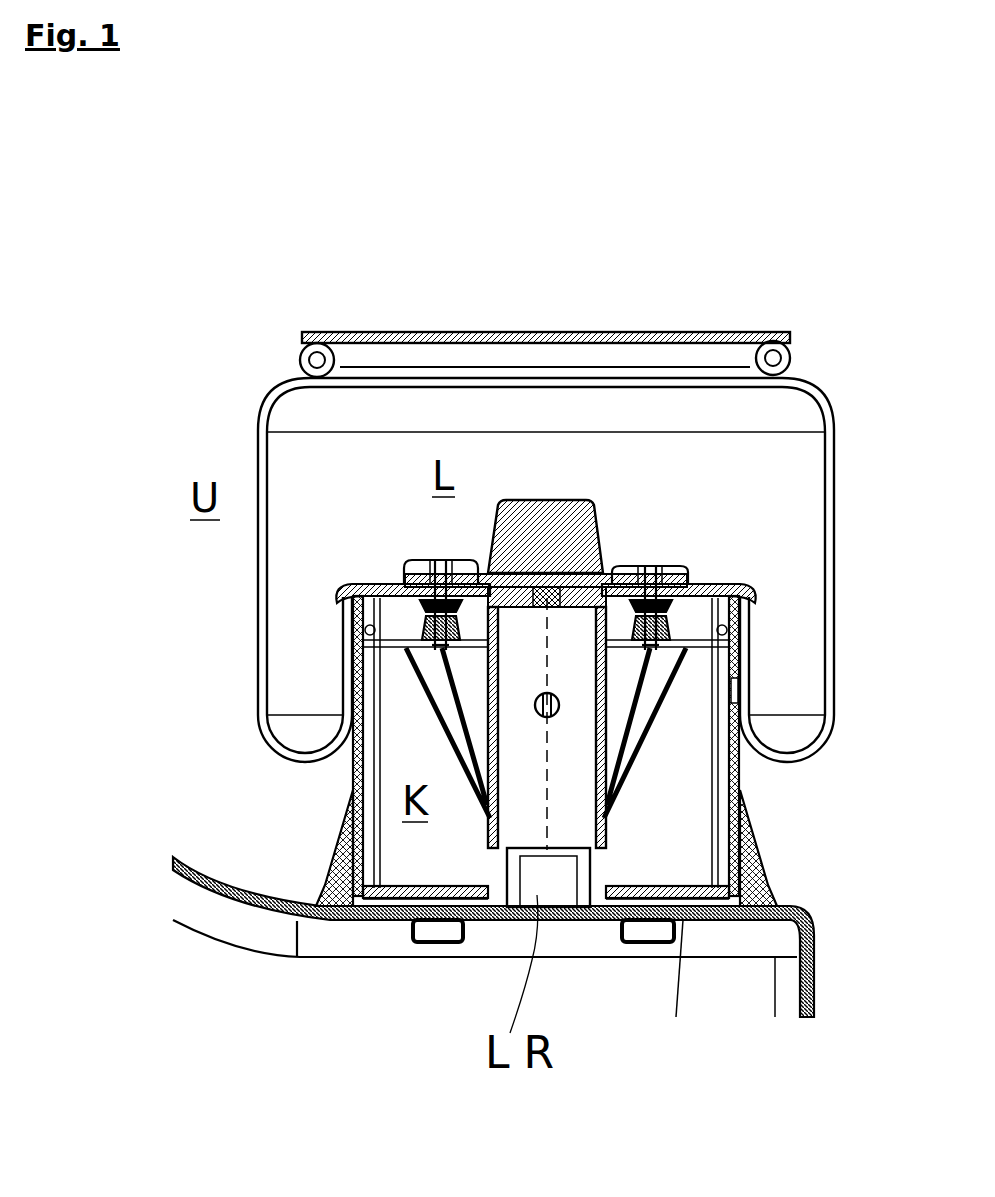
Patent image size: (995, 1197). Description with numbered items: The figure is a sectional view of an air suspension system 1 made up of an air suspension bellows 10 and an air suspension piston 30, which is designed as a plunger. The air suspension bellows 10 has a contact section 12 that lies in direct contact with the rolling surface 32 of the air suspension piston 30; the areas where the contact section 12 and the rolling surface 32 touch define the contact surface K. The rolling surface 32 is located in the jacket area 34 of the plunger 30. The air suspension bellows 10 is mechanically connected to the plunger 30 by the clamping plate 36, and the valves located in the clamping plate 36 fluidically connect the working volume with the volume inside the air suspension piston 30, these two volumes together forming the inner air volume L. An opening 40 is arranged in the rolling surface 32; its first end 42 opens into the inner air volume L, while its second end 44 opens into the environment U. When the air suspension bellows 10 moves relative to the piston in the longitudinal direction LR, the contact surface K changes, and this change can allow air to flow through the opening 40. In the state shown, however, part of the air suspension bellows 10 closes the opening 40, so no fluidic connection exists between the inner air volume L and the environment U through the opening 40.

The air suspension system 1 is at (165, 350).
The air suspension bellows 10 is at (822, 350).
The contact section 12 is at (770, 650).
The air suspension piston 30 is at (348, 828).
The rolling surface 32 is at (350, 650).
The jacket area 34 is at (763, 795).
The clamping plate 36 is at (385, 598).
The opening 40 is at (735, 690).
The first end 42 is at (730, 690).
The second end 44 is at (738, 690).